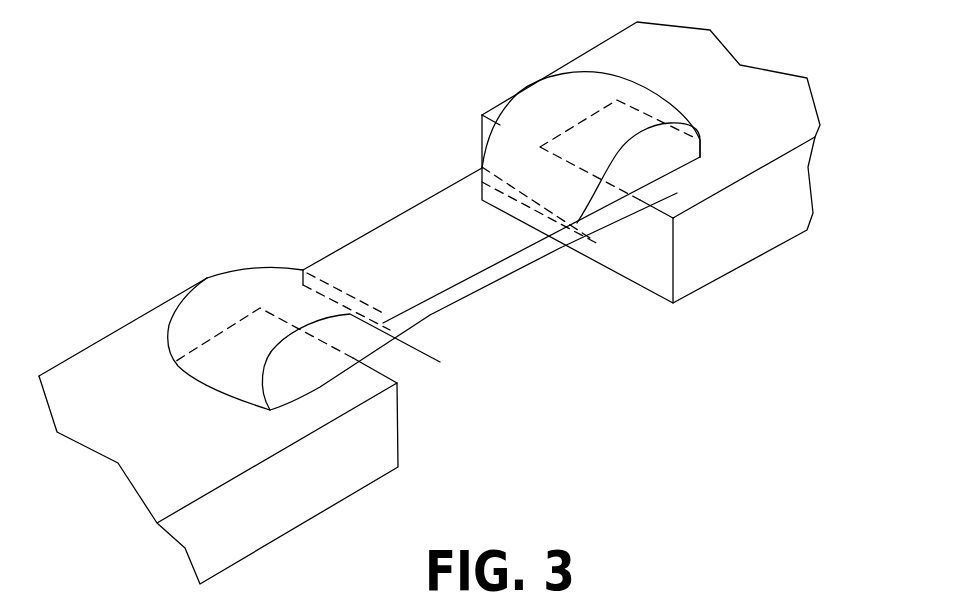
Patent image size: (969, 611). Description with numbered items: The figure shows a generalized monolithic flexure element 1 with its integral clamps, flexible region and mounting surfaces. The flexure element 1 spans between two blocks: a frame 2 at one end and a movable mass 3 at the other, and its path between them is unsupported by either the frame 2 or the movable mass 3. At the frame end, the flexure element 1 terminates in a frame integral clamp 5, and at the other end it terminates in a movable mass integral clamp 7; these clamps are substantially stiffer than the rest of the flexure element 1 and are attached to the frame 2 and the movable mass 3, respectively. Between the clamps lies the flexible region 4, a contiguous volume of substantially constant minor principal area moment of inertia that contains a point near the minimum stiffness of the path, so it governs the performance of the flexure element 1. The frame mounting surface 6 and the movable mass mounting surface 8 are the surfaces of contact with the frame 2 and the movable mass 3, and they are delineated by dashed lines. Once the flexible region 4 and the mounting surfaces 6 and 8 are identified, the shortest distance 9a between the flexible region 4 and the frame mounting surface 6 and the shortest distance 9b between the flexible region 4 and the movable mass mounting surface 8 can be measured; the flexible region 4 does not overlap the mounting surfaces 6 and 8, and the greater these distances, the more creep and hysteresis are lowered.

The monolithic flexure element 1 is at (390, 177).
The frame 2 is at (163, 300).
The movable mass 3 is at (557, 68).
The flexible region 4 is at (383, 222).
The frame integral clamp 5 is at (247, 268).
The frame mounting surface 6 is at (220, 323).
The movable mass integral clamp 7 is at (550, 88).
The movable mass mounting surface 8 is at (560, 127).
The shortest distance 9a is at (410, 348).
The shortest distance 9b is at (647, 210).